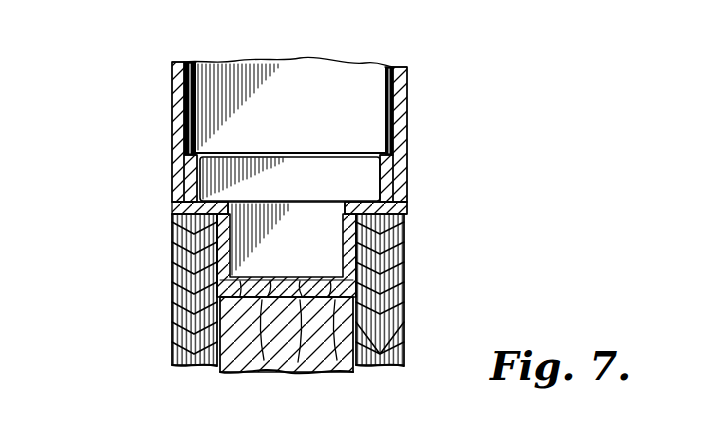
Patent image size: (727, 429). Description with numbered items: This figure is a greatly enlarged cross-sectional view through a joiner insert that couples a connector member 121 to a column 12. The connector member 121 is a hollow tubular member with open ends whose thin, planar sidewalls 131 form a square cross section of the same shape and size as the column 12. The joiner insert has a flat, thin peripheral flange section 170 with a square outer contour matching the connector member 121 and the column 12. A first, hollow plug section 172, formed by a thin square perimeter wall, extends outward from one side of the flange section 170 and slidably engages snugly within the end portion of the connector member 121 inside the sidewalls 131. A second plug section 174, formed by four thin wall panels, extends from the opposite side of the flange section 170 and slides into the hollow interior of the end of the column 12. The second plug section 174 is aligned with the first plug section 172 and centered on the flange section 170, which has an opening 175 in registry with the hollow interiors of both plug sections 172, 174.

The connector member 121 is at (163, 96).
The sidewalls 131 is at (407, 101).
The first plug section 172 is at (407, 165).
The peripheral flange section 170 is at (405, 210).
The second plug section 174 is at (352, 248).
The opening 175 is at (287, 212).
The columns 12 is at (405, 290).